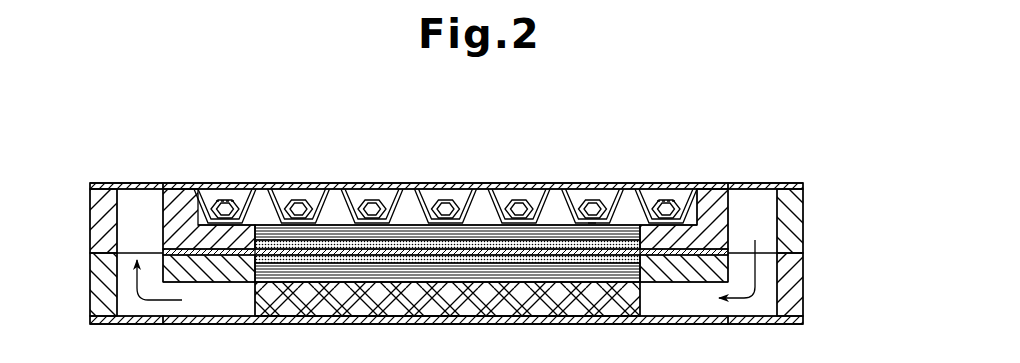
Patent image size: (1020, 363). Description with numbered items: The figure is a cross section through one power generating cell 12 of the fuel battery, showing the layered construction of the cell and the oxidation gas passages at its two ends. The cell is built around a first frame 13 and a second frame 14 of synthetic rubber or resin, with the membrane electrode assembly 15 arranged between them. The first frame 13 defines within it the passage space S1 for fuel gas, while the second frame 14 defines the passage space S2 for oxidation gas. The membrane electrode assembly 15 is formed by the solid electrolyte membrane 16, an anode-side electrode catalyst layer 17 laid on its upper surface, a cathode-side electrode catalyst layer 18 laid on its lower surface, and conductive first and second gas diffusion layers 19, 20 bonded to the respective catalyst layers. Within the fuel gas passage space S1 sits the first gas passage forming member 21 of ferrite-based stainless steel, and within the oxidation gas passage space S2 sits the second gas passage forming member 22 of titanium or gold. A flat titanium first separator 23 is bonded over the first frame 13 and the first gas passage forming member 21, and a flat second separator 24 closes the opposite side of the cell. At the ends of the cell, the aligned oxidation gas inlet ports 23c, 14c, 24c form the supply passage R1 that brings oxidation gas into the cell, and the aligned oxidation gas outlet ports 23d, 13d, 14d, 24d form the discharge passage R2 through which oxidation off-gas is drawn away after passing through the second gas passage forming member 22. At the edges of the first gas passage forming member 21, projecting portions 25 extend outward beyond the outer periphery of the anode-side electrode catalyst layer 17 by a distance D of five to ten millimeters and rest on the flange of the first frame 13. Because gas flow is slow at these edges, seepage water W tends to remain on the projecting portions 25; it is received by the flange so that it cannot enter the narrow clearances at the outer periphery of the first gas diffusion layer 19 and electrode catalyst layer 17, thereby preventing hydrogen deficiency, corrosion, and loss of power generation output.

The power generating cell 12 is at (828, 183).
The first frame 13 is at (808, 230).
The oxidation gas outlet port 13d is at (129, 199).
The second frame 14 is at (808, 287).
The oxidation gas inlet port 14c is at (778, 263).
The oxidation gas outlet port 14d is at (118, 268).
The membrane electrode assembly 15 is at (343, 247).
The solid electrolyte membrane 16 is at (410, 253).
The electrode catalyst layer 17 is at (447, 247).
The electrode catalyst layer 18 is at (460, 265).
The first gas diffusion layer 19 is at (518, 233).
The second gas diffusion layer 20 is at (522, 275).
The first gas passage forming member 21 is at (595, 205).
The second gas passage forming member 22 is at (577, 298).
The first separator 23 is at (650, 195).
The oxidation gas inlet port 23c is at (763, 185).
The oxidation gas outlet port 23d is at (170, 169).
The second separator 24 is at (663, 323).
The oxidation gas inlet port 24c is at (731, 316).
The oxidation gas outlet port 24d is at (162, 323).
The projecting portion 25 is at (226, 198).
The distance D is at (254, 225).
The seepage water W is at (236, 180).
The supply passage R1 is at (755, 207).
The discharge passage R2 is at (138, 207).
The passage space for fuel gas S1 is at (557, 205).
The passage space for oxidation gas S2 is at (227, 301).